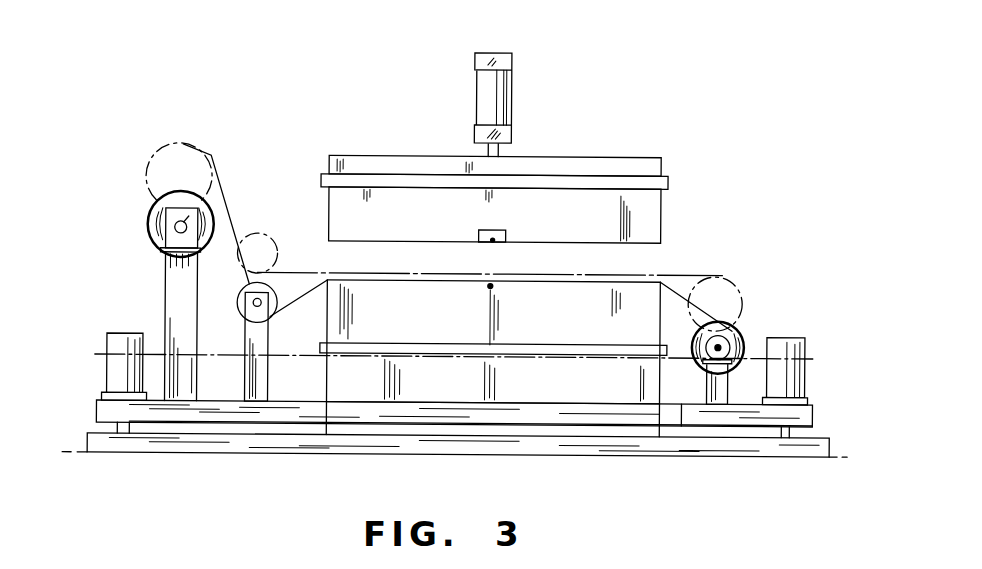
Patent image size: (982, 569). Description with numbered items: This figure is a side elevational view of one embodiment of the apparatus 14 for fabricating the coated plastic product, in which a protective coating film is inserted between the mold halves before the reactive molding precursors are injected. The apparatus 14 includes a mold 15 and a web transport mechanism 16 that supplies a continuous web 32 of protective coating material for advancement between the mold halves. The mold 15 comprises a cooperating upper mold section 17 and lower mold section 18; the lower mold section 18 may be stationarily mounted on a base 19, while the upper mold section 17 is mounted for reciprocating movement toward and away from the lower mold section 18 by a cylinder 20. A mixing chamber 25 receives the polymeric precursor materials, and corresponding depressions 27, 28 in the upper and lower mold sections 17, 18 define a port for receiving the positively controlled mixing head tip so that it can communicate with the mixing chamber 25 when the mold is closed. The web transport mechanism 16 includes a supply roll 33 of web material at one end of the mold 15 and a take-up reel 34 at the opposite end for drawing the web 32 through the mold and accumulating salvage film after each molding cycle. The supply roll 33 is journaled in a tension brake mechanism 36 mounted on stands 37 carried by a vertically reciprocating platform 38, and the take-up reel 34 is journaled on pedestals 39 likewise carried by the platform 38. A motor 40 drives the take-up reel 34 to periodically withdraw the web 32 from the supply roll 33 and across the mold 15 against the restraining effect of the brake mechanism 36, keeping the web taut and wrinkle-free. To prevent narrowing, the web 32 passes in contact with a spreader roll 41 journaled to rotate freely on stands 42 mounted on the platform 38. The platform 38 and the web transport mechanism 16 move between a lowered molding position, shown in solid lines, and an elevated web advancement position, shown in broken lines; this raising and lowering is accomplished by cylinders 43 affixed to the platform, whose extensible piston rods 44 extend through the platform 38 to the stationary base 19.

The apparatus 14 is at (637, 132).
The mold 15 is at (672, 242).
The web transport mechanism 16 is at (227, 191).
The upper mold section 17 is at (657, 167).
The lower mold section 18 is at (661, 281).
The base 19 is at (618, 452).
The cylinder 20 is at (483, 92).
The mixing chamber 25 is at (507, 233).
The depression 27 is at (490, 243).
The depression 28 is at (493, 288).
The web 32 is at (300, 301).
The supply roll 33 is at (150, 218).
The take-up reel 34 is at (740, 340).
The tension brake mechanism 36 is at (168, 232).
The stands 37 is at (180, 283).
The platform 38 is at (212, 415).
The pedestals 39 is at (712, 393).
The motor 40 is at (723, 342).
The spreader roll 41 is at (240, 297).
The stands 42 is at (260, 361).
The cylinders 43 is at (115, 340).
The piston rods 44 is at (118, 428).